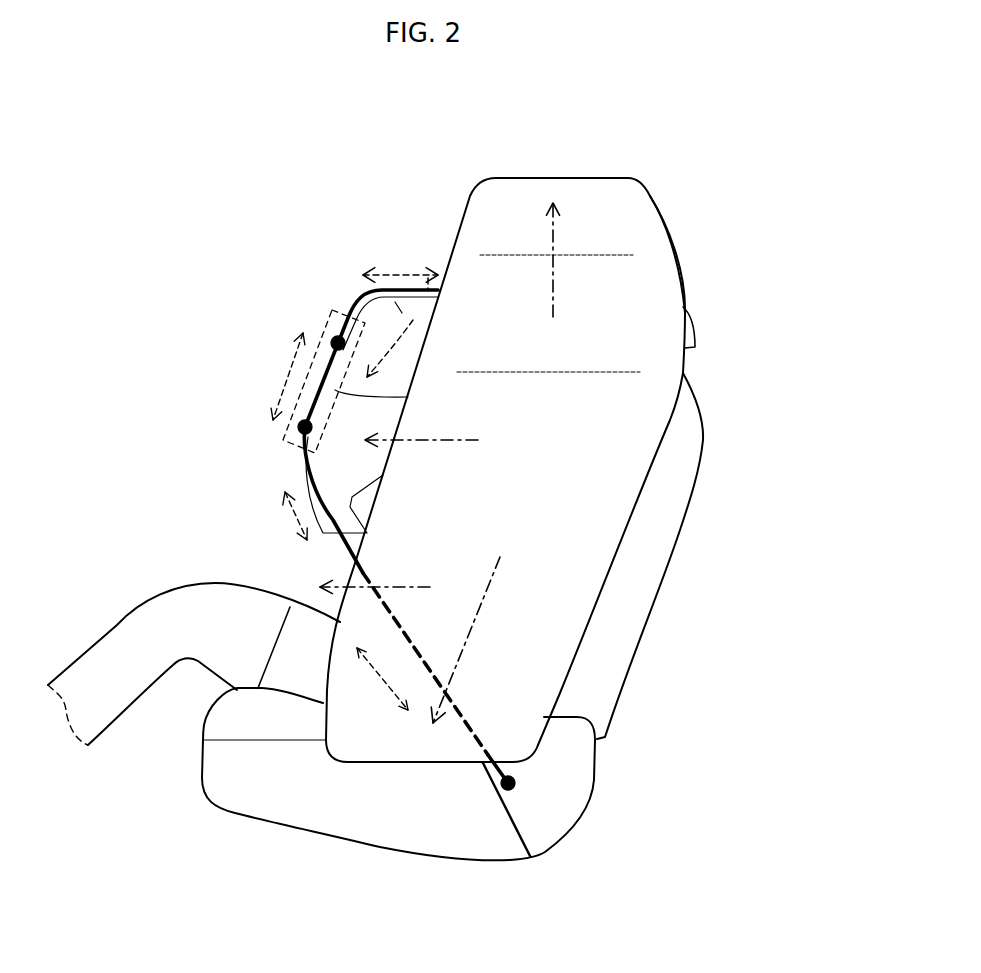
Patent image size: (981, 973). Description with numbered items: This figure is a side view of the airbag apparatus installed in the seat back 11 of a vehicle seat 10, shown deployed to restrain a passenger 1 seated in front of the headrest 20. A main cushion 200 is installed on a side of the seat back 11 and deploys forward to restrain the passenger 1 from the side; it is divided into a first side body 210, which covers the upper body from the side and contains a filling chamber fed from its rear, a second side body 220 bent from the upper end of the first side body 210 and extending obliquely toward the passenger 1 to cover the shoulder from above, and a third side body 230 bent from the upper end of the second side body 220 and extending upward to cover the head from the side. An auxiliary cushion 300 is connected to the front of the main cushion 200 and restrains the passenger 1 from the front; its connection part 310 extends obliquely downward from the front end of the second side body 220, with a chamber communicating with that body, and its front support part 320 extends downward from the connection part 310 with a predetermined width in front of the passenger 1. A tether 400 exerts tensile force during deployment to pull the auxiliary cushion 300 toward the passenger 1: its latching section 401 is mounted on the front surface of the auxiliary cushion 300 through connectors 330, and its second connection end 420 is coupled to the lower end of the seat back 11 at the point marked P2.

The passenger 1 is at (130, 641).
The vehicle seat 10 is at (556, 808).
The seat back 11 is at (660, 510).
The headrest 20 is at (688, 335).
The main cushion 200 is at (635, 283).
The first side body 210 is at (580, 620).
The second side body 220 is at (647, 305).
The third side body 230 is at (595, 200).
The auxiliary cushion 300 is at (377, 317).
The connection part 310 is at (402, 313).
The front support part 320 is at (313, 483).
The connector 330 is at (333, 338).
The tether 400 is at (428, 275).
The latching section 401 is at (330, 323).
The second connection end 420 is at (495, 772).
The anchor point P2 is at (515, 788).